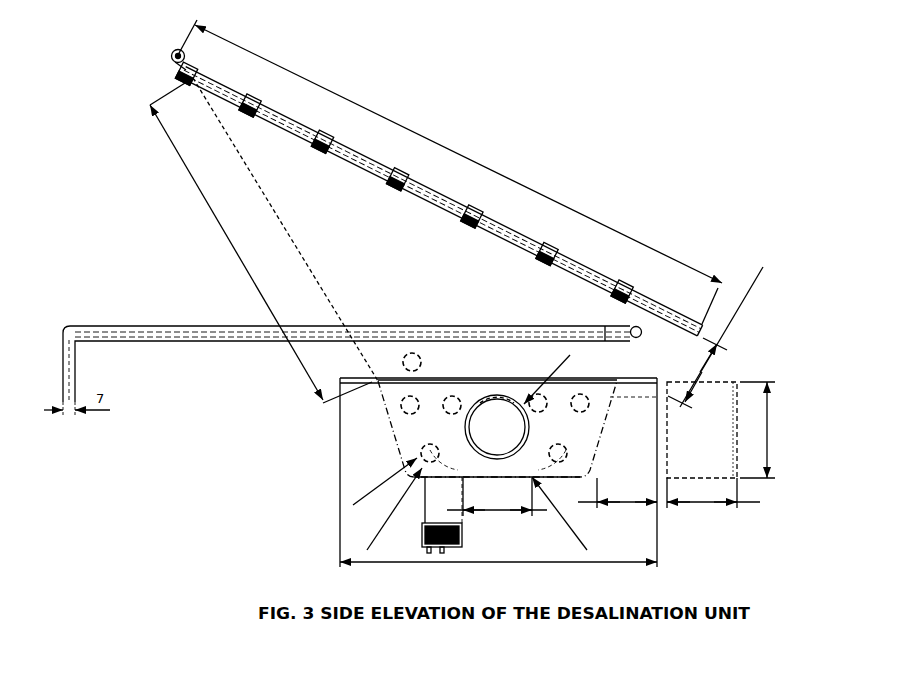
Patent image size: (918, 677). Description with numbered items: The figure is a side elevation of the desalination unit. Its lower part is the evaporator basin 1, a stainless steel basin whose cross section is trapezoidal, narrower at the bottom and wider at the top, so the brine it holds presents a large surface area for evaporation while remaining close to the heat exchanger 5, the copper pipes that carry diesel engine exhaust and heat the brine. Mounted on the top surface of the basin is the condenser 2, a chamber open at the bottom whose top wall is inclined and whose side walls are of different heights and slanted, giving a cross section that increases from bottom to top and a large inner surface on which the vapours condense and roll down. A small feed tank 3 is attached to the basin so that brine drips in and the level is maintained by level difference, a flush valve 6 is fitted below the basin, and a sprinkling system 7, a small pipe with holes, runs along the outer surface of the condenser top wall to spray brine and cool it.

The evaporator basin 1 is at (522, 477).
The condenser 2 is at (456, 214).
The feed tank 3 is at (737, 419).
The heat exchanger 5 is at (453, 450).
The flush valve 6 is at (408, 538).
The sprinkling system 7 is at (126, 90).